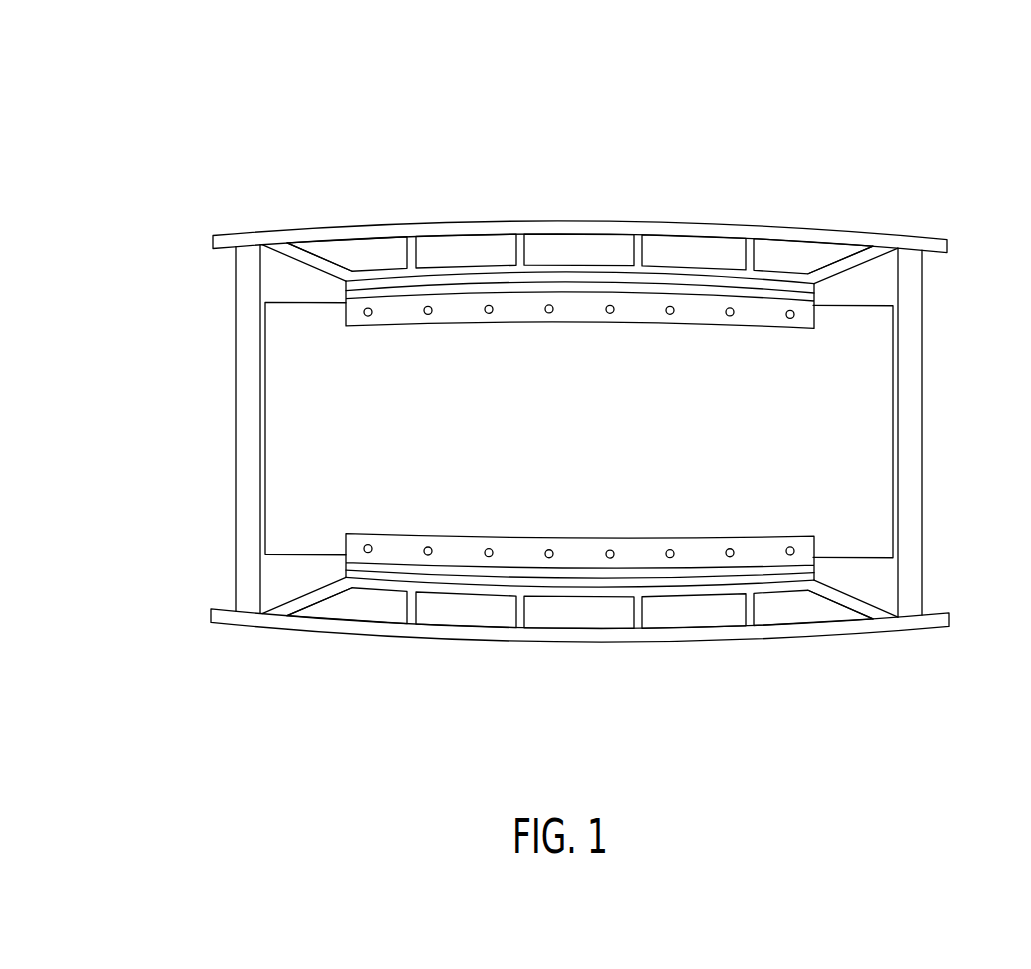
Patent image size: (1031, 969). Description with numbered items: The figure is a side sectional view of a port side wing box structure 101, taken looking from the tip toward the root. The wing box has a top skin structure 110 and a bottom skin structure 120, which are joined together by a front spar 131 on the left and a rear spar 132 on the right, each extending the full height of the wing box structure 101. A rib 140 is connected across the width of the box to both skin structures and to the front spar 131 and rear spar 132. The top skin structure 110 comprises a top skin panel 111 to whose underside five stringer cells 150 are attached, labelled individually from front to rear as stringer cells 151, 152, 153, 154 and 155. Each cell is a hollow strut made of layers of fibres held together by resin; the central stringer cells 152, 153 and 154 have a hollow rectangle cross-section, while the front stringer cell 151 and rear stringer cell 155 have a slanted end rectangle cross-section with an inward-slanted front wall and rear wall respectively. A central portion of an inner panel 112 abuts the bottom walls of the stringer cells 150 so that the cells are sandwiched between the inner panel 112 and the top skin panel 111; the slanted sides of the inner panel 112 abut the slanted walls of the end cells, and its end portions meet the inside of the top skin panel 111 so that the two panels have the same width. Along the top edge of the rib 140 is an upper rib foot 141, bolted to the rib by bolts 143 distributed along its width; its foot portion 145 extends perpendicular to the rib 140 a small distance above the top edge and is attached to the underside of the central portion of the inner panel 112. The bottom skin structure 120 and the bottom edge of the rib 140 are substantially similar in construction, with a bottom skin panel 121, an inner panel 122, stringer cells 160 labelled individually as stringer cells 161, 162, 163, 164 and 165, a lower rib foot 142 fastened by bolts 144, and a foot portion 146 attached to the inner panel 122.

The wing box structure 101 is at (905, 118).
The top skin structure 110 is at (123, 213).
The top skin panel 111 is at (840, 237).
The inner panel 112 is at (310, 260).
The bottom skin structure 120 is at (118, 557).
The bottom skin panel 121 is at (838, 632).
The inner panel 122 is at (308, 597).
The front spar 131 is at (247, 410).
The rear spar 132 is at (910, 417).
The rib 140 is at (875, 480).
The upper rib foot 141 is at (357, 318).
The lower rib foot 142 is at (357, 543).
The bolts 143 is at (789, 314).
The bolts 144 is at (789, 545).
The foot portion 145 is at (707, 285).
The foot portion 146 is at (707, 575).
The stringer cells 150 is at (355, 150).
The front stringer cell 151 is at (358, 254).
The stringer cell 152 is at (463, 245).
The stringer cell 153 is at (577, 245).
The stringer cell 154 is at (697, 247).
The rear stringer cell 155 is at (803, 257).
The stringer cells 160 is at (807, 712).
The stringer cell 161 is at (355, 605).
The stringer cell 162 is at (460, 617).
The stringer cell 163 is at (573, 617).
The stringer cell 164 is at (696, 617).
The stringer cell 165 is at (800, 610).